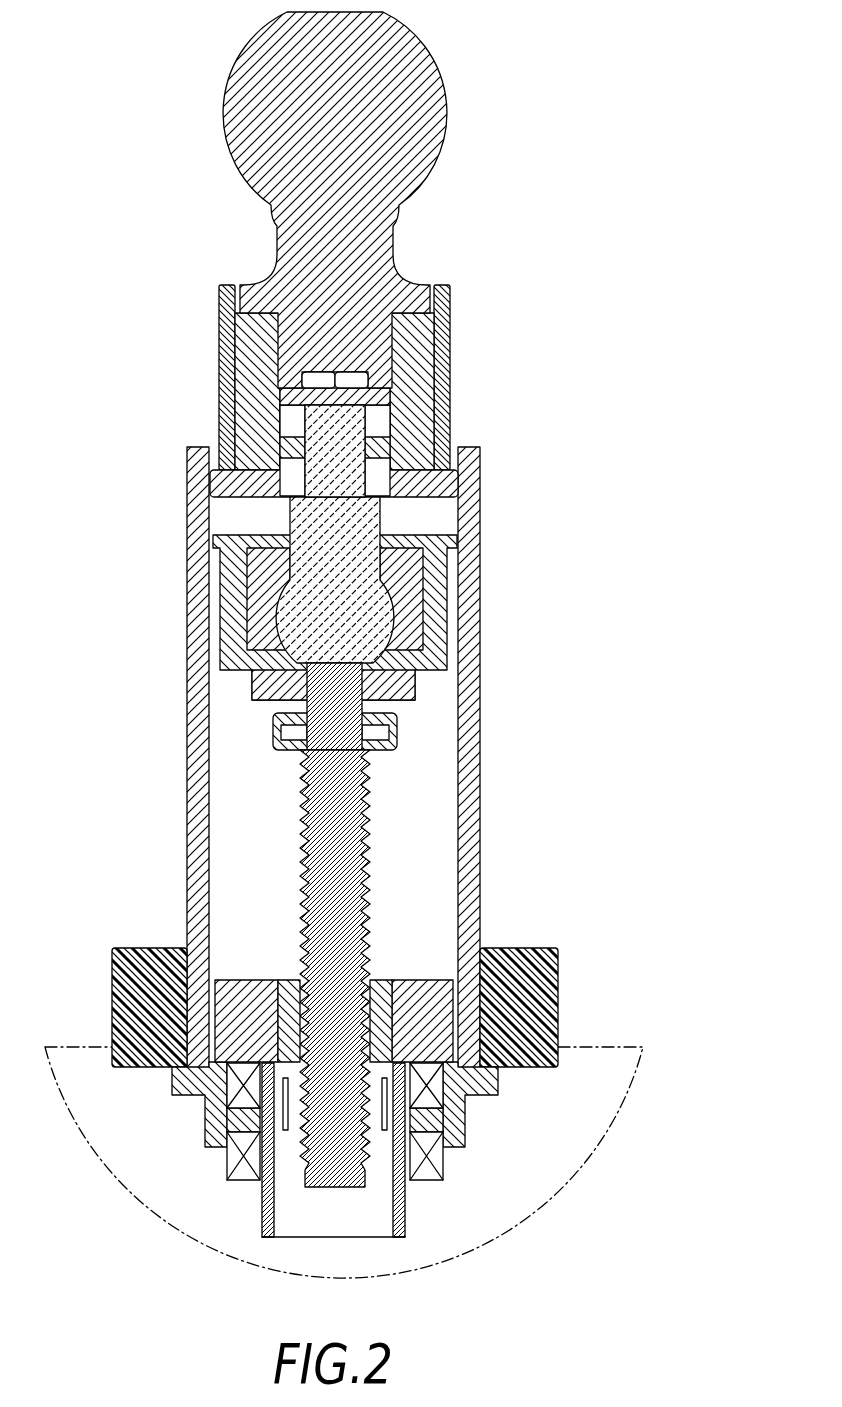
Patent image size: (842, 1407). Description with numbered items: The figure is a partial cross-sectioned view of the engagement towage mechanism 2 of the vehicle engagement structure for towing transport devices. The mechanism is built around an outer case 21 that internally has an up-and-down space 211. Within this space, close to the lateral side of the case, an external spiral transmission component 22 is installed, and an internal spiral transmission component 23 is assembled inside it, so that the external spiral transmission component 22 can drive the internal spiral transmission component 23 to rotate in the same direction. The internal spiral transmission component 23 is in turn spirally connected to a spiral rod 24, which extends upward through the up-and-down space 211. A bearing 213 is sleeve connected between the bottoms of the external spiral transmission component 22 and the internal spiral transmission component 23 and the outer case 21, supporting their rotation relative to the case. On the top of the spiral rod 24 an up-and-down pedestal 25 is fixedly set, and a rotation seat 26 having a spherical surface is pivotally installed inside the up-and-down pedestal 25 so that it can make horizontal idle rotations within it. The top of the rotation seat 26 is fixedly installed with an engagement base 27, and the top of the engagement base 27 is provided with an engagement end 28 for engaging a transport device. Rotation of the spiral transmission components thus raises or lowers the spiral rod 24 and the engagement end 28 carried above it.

The engagement towage mechanism 2 is at (350, 645).
The outer case 21 is at (192, 913).
The up-and-down space 211 is at (237, 857).
The external spiral transmission component 22 is at (432, 993).
The internal spiral transmission component 23 is at (383, 985).
The spiral rod 24 is at (317, 787).
The up-and-down pedestal 25 is at (243, 657).
The rotation seat 26 is at (313, 618).
The engagement base 27 is at (258, 398).
The engagement end 28 is at (247, 155).
The bearing 213 is at (443, 1160).